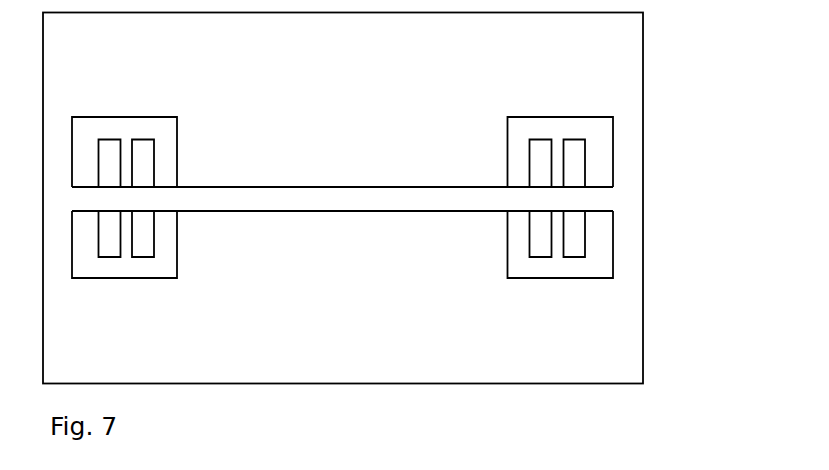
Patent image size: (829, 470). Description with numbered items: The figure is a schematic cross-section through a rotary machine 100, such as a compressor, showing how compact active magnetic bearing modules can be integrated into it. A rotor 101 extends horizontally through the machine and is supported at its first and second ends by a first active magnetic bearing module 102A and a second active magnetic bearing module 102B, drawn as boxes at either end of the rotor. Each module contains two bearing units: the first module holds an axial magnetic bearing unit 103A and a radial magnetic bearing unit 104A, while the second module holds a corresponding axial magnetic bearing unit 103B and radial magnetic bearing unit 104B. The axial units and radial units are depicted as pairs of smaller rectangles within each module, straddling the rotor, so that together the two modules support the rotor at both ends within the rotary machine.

The rotary machine 100 is at (642, 325).
The rotor 101 is at (340, 210).
The first active magnetic bearing module 102A is at (113, 117).
The second active magnetic bearing module 102B is at (550, 117).
The axial magnetic bearing unit 103A is at (148, 257).
The axial magnetic bearing unit 103B is at (577, 257).
The radial magnetic bearing unit 104A is at (113, 257).
The radial magnetic bearing unit 104B is at (542, 257).